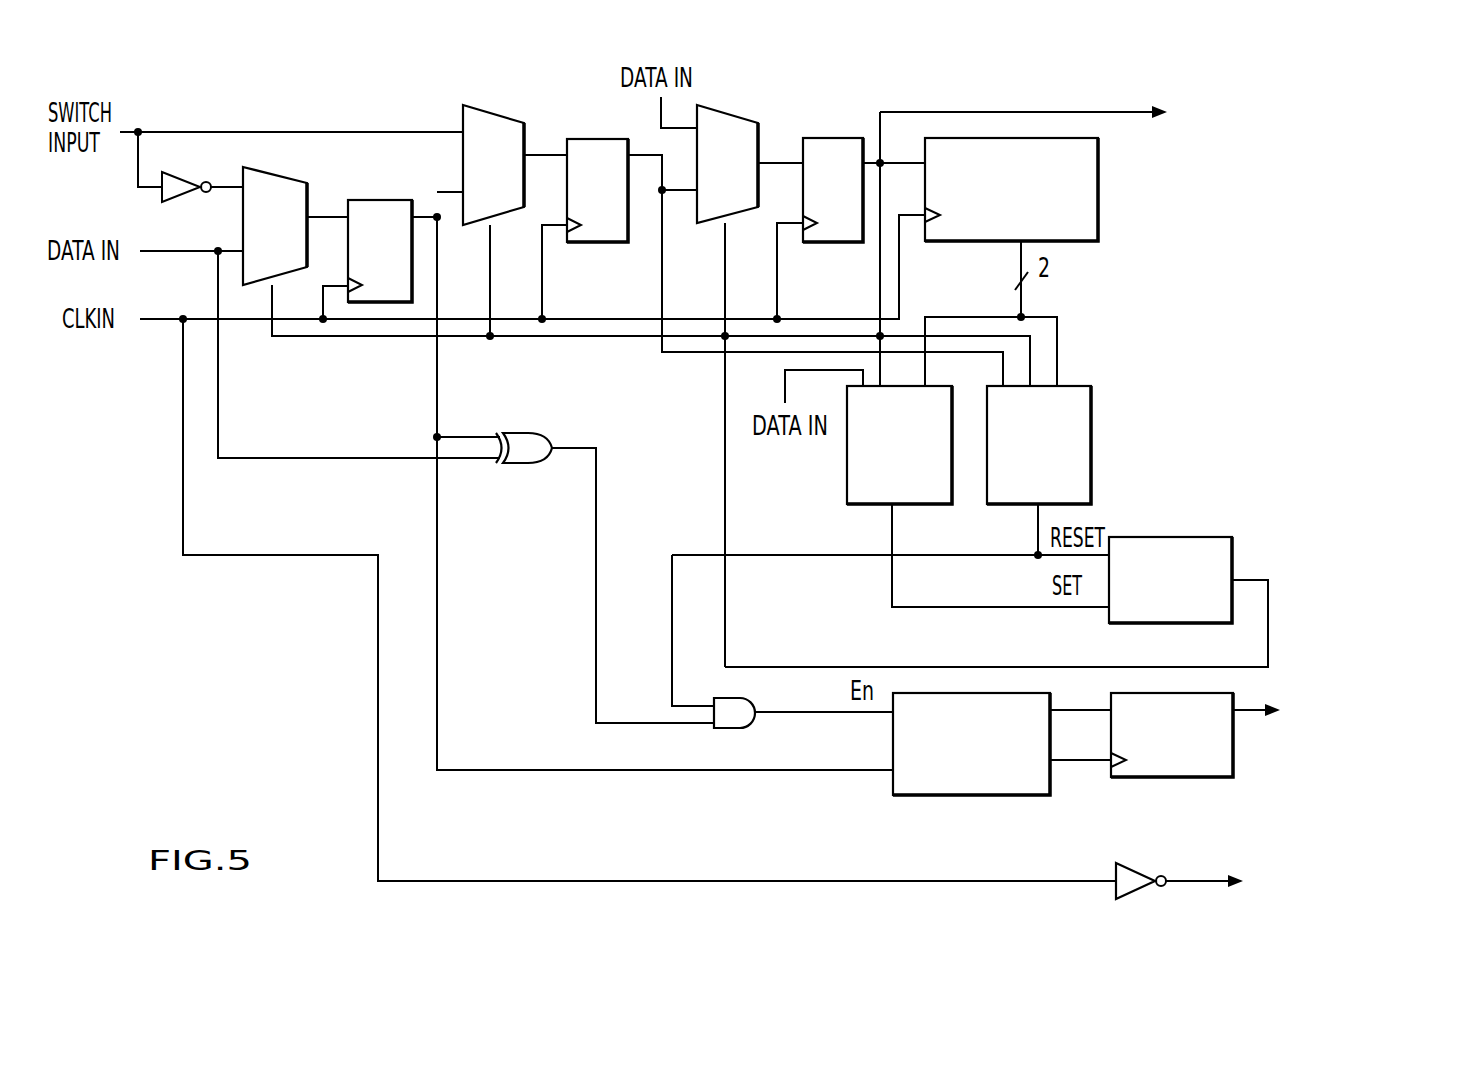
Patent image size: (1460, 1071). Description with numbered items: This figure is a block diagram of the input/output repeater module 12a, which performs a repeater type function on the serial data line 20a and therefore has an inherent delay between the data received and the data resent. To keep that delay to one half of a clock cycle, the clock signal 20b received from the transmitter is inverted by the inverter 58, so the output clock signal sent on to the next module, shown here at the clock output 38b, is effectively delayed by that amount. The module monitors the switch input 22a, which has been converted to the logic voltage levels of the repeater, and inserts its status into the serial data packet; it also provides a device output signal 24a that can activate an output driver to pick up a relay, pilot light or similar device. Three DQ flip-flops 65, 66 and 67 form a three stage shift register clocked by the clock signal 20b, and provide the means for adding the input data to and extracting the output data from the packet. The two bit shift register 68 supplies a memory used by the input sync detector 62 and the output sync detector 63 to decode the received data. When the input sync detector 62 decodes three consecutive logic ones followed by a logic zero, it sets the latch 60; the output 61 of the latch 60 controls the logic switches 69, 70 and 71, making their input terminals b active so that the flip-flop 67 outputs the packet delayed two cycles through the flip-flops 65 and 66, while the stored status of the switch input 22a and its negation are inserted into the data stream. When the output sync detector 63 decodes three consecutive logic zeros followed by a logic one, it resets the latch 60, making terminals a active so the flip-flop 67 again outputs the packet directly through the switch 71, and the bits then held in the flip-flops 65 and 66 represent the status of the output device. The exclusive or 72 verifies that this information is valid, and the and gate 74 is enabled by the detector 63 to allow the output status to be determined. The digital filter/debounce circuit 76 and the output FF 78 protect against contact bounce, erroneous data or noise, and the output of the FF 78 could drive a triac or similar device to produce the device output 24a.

The input/output repeater module 12a is at (293, 690).
The serial data line 20a is at (152, 251).
The clock signal 20b is at (152, 320).
The switch input 22a is at (138, 132).
The device output signal 24a is at (1262, 715).
The clock output 38b is at (1190, 877).
The inverter 58 is at (1137, 865).
The latch 60 is at (1208, 542).
The output of latch 61 is at (1270, 618).
The input sync detector 62 is at (857, 493).
The output sync detector 63 is at (1082, 447).
The DQ flip-flop 65 is at (367, 198).
The DQ flip-flop 66 is at (597, 145).
The DQ flip-flop 67 is at (830, 143).
The two bit shift register 68 is at (1057, 147).
The logic switch 69 is at (278, 185).
The logic switch 70 is at (505, 125).
The logic switch 71 is at (745, 122).
The exclusive or 72 is at (527, 440).
The and gate 74 is at (728, 726).
The digital filter/debounce circuit 76 is at (907, 782).
The output FF 78 is at (1148, 768).